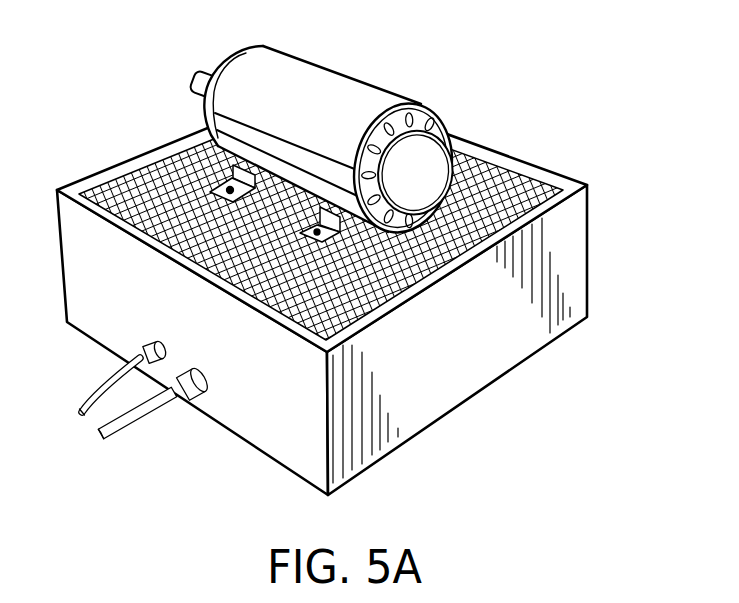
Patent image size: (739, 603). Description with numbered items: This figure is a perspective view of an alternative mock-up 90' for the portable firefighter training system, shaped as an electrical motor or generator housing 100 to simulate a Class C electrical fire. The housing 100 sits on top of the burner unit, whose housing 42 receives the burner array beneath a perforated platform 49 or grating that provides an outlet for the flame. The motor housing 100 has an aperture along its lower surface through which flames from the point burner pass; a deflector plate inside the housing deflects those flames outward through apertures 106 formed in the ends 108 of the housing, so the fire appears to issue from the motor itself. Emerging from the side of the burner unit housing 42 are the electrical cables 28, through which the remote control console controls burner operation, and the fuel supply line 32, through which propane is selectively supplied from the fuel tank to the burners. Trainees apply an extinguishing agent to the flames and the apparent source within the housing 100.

The mock-up 90' is at (331, 252).
The electrical motor or generator housing 100 is at (370, 144).
The apertures 106 is at (426, 101).
The ends of the housing 108 is at (453, 126).
The perforated platform 49 is at (528, 195).
The housing 42 is at (342, 290).
The electrical cables 28 is at (103, 386).
The fuel supply line 32 is at (139, 416).